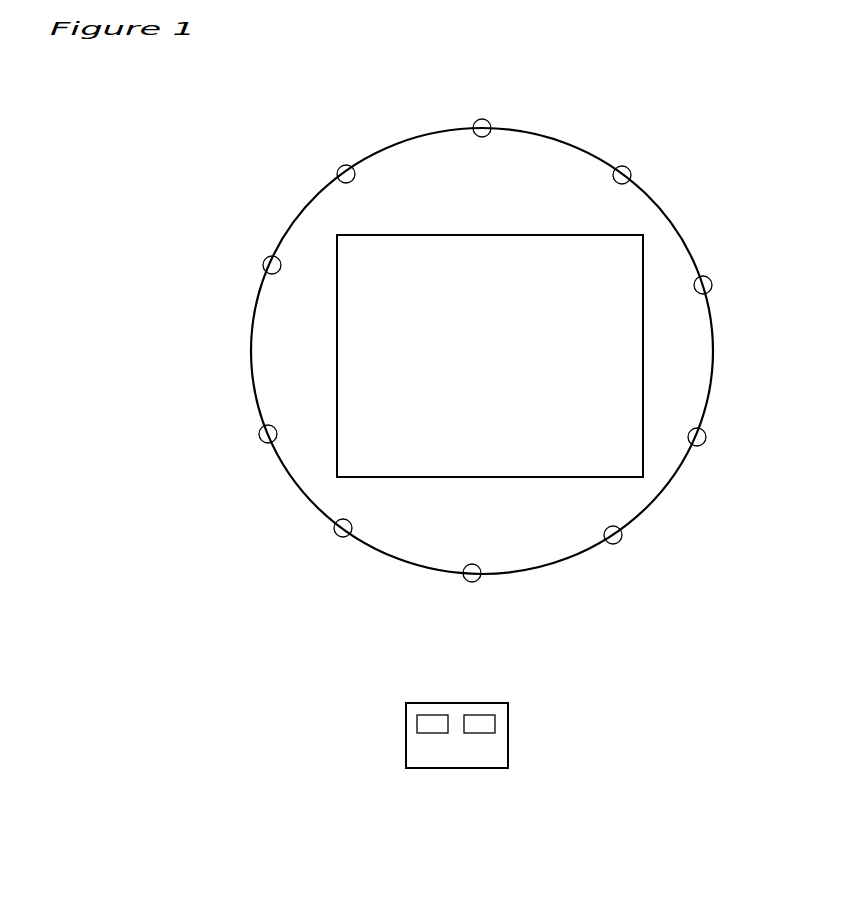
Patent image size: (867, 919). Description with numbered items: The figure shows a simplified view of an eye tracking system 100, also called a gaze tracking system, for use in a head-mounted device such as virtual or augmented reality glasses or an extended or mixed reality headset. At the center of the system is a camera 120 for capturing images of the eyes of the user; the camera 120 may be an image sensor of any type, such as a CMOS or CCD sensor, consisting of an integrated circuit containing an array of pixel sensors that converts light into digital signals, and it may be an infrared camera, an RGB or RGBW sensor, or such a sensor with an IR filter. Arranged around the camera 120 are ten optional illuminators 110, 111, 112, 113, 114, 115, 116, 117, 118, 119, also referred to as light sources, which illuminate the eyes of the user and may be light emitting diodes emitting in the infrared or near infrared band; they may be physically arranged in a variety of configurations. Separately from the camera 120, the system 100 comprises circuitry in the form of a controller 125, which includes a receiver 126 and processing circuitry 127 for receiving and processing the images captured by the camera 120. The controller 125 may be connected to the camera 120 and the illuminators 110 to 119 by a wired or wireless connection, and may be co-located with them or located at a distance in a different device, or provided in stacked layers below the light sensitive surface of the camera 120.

The eye tracking system 100 is at (218, 590).
The illuminator 110 is at (270, 256).
The illuminator 111 is at (344, 165).
The illuminator 112 is at (482, 119).
The illuminator 113 is at (625, 167).
The illuminator 114 is at (708, 277).
The illuminator 115 is at (700, 445).
The illuminator 116 is at (616, 543).
The illuminator 117 is at (470, 582).
The illuminator 118 is at (341, 537).
The illuminator 119 is at (266, 443).
The camera 120 is at (497, 232).
The controller 125 is at (445, 758).
The receiver 126 is at (422, 716).
The processing circuitry 127 is at (487, 716).